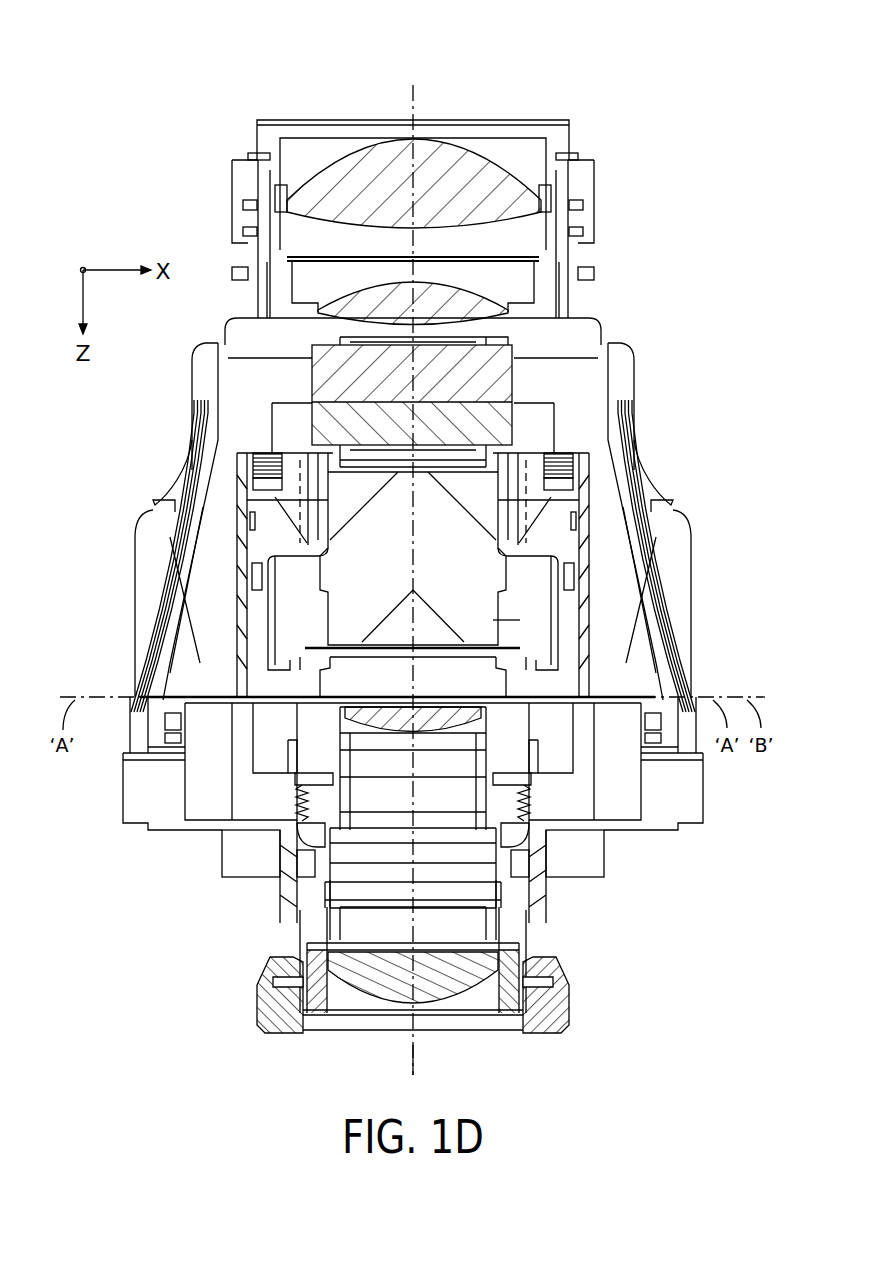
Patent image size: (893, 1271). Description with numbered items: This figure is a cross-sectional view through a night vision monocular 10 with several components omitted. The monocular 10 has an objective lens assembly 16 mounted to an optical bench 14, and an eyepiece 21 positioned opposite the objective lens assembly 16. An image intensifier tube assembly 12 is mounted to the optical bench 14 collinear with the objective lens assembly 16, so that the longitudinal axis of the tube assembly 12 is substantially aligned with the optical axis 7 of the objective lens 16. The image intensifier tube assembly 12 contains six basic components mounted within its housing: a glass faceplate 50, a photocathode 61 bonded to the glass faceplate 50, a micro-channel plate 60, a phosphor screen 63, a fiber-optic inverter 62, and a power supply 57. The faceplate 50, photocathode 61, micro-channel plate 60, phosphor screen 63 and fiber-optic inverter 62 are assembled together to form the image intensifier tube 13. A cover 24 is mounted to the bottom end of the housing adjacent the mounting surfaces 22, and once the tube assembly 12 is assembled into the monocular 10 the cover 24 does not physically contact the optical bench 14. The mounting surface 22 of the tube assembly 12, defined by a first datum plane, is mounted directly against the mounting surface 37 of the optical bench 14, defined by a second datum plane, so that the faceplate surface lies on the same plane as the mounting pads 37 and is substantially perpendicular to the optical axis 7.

The night vision monocular 10 is at (693, 244).
The eyepiece 21 is at (430, 143).
The fiber-optic inverter 62 is at (377, 507).
The power supply 57 is at (540, 523).
The image intensifier tube assembly 12 is at (566, 551).
The image intensifier tube 13 is at (460, 636).
The phosphor screen 63 is at (520, 620).
The mounting surface (mounting pads) of optical bench 37 is at (632, 697).
The photocathode 61 is at (280, 648).
The micro-channel plate (MCP) 60 is at (250, 662).
The mounting surface of image intensifier tube assembly 22 is at (238, 690).
The glass faceplate 50 is at (345, 676).
The cover 24 is at (530, 703).
The optical bench 14 is at (657, 790).
The objective lens assembly 16 is at (458, 993).
The optical axis 7 is at (404, 1060).